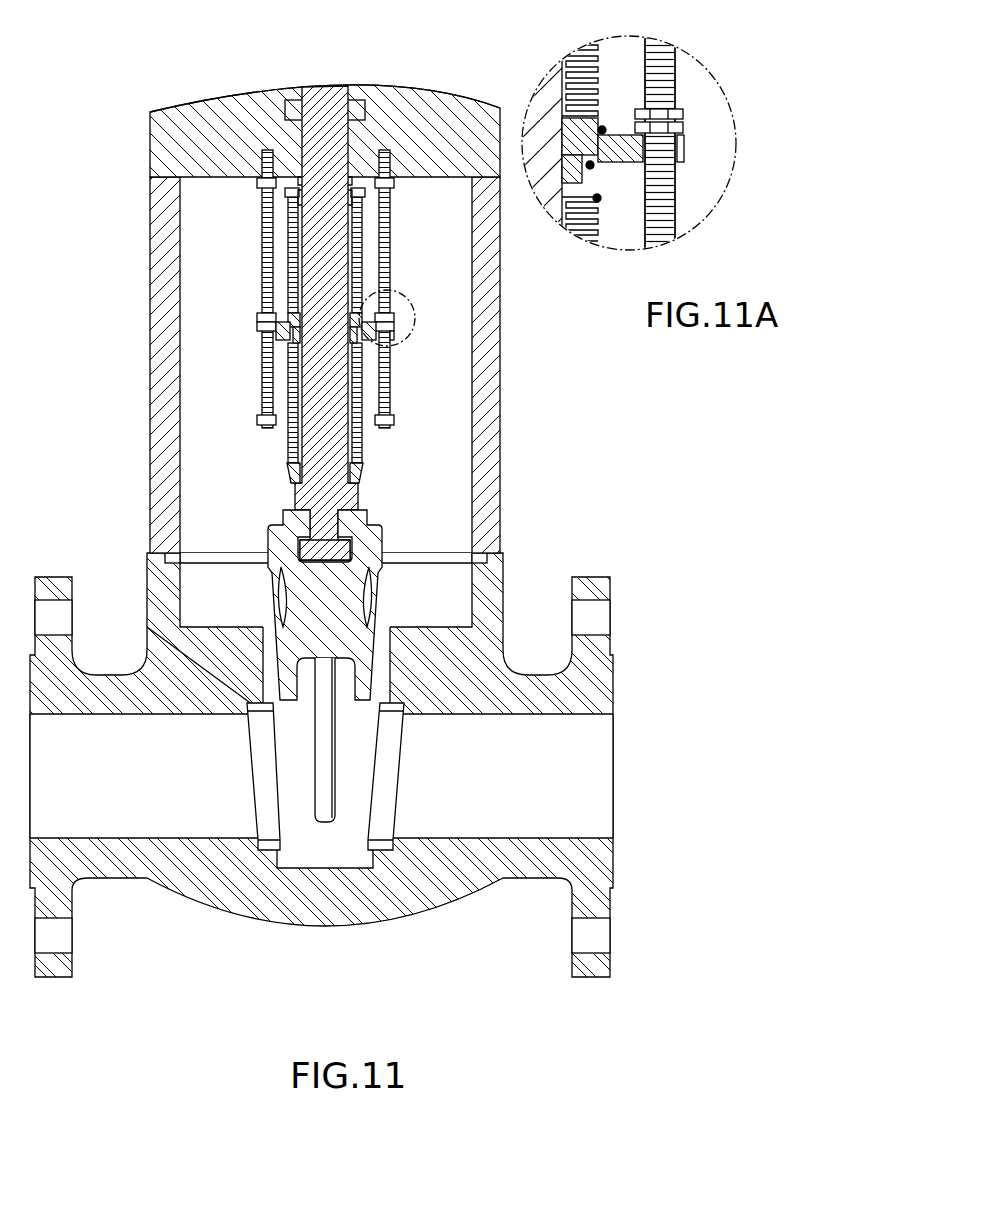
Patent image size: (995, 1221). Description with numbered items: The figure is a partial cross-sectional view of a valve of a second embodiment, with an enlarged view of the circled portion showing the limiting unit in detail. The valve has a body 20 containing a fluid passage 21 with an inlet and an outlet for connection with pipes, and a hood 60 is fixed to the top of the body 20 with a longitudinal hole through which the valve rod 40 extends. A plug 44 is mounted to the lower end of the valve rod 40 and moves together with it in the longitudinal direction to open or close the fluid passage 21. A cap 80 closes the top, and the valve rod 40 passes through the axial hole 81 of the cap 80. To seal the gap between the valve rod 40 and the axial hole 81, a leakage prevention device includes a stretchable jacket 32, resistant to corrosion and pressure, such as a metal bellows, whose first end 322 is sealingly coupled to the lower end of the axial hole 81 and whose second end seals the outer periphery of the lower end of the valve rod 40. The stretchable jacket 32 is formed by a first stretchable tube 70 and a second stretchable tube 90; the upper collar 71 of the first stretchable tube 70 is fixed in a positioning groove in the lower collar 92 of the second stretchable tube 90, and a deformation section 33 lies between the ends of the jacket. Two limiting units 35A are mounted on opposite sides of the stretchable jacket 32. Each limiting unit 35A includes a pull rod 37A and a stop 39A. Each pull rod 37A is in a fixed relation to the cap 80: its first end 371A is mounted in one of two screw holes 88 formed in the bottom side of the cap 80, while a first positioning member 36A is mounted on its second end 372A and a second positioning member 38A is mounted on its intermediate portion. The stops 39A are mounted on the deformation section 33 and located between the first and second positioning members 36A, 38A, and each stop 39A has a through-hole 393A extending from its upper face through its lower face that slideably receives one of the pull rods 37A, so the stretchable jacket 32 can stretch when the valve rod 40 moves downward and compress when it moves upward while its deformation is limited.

In FIG. 11, the body 20 is at (322, 920).
In FIG. 11, the fluid passage 21 is at (612, 748).
In FIG. 11, the stretchable jacket 32 is at (282, 240).
In FIG. 11, the deformation section 33 is at (282, 443).
In FIG. 11, the limiting unit 35A is at (258, 290).
In FIG. 11, the first positioning member 36A is at (397, 423).
In FIG. 11, the pull rod 37A is at (387, 398).
In FIG. 11A, the pull rod 37A is at (600, 65).
In FIG. 11, the second end 372A is at (390, 410).
In FIG. 11, the second positioning member 38A is at (395, 314).
In FIG. 11A, the second positioning member 38A is at (687, 107).
In FIG. 11, the stop 39A is at (392, 327).
In FIG. 11A, the stop 39A is at (685, 145).
In FIG. 11, the valve rod 40 is at (362, 437).
In FIG. 11, the plug 44 is at (373, 535).
In FIG. 11, the hood 60 is at (163, 248).
In FIG. 11, the first stretchable tube 70 is at (287, 390).
In FIG. 11A, the first stretchable tube 70 is at (602, 130).
In FIG. 11, the upper collar 71 is at (292, 343).
In FIG. 11A, the upper collar 71 is at (600, 224).
In FIG. 11, the cap 80 is at (152, 150).
In FIG. 11, the axial hole 81 is at (303, 135).
In FIG. 11, the screw hole 88 is at (384, 195).
In FIG. 11, the second stretchable tube 90 is at (288, 265).
In FIG. 11A, the second stretchable tube 90 is at (643, 43).
In FIG. 11, the lower collar 92 is at (292, 327).
In FIG. 11A, the lower collar 92 is at (597, 198).
In FIG. 11, the first end 322 is at (345, 178).
In FIG. 11, the first end 371A is at (388, 203).
In FIG. 11A, the through-hole 393A is at (672, 147).